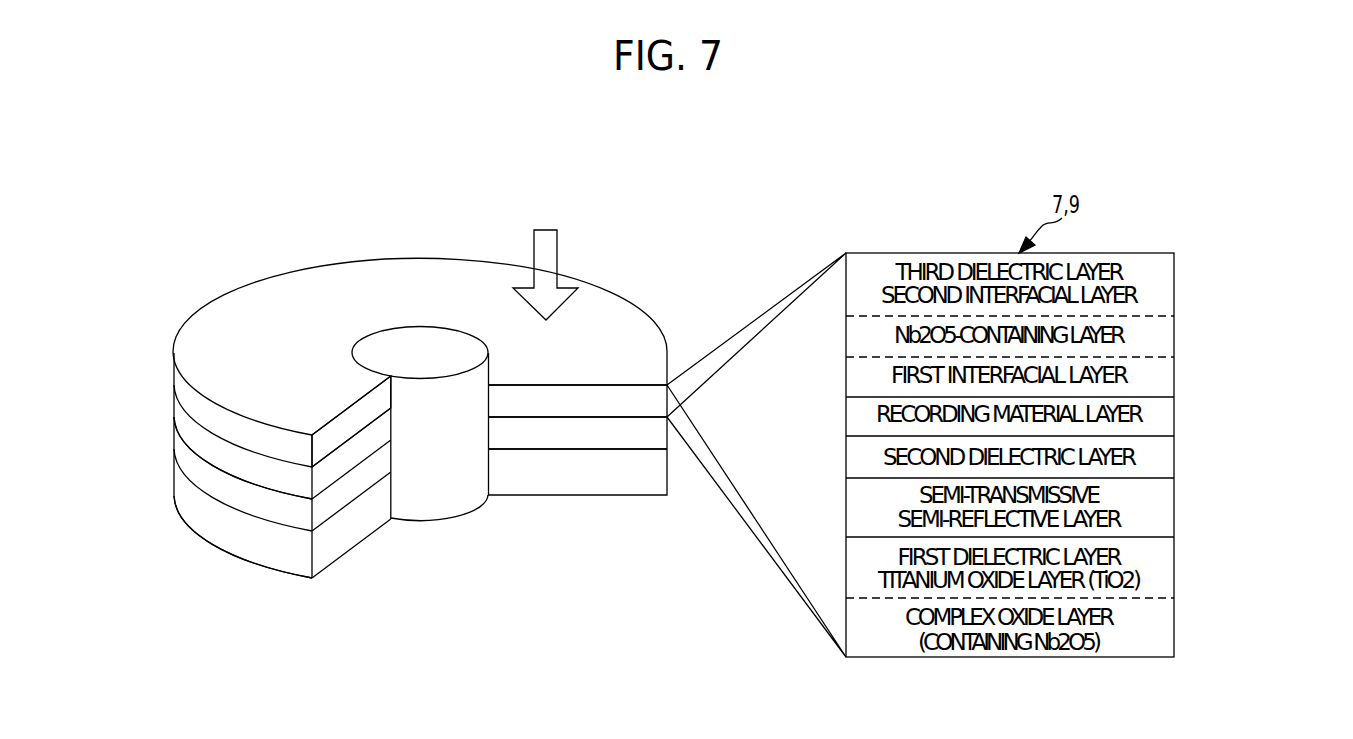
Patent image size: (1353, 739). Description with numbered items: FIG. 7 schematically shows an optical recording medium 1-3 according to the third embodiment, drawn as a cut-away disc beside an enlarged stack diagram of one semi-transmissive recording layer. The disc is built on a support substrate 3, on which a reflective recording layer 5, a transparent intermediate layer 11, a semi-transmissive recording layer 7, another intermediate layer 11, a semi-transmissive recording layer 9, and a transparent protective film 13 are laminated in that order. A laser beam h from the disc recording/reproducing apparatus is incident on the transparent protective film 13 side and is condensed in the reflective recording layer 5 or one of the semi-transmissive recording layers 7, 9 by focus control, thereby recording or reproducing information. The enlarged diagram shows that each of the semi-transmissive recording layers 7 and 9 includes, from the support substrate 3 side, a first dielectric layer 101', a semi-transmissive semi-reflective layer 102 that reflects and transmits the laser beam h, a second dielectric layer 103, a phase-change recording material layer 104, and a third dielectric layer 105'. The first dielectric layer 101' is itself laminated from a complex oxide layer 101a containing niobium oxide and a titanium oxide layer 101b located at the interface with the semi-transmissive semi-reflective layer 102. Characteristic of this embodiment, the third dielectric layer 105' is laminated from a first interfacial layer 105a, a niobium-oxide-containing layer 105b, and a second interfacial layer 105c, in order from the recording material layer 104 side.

The optical recording medium 1-3 is at (791, 134).
The support substrate 3 is at (207, 528).
The reflective recording layer 5 is at (563, 450).
The semi-transmissive recording layer 7 is at (596, 418).
The semi-transmissive recording layer 9 is at (629, 385).
The intermediate layer 11 is at (292, 480).
The transparent protective film 13 is at (353, 423).
The laser beam h is at (559, 247).
The complex oxide layer 101a is at (1176, 628).
The titanium oxide layer 101b is at (1176, 568).
The first dielectric layer 101' is at (1087, 597).
The semi-transmissive semi-reflective layer 102 is at (1176, 508).
The second dielectric layer 103 is at (1176, 456).
The recording material layer 104 is at (1176, 415).
The first interfacial layer 105a is at (1176, 377).
The Nb2O5-containing layer 105b is at (1176, 337).
The second interfacial layer 105c is at (1176, 286).
The third dielectric layer 105' is at (1087, 325).